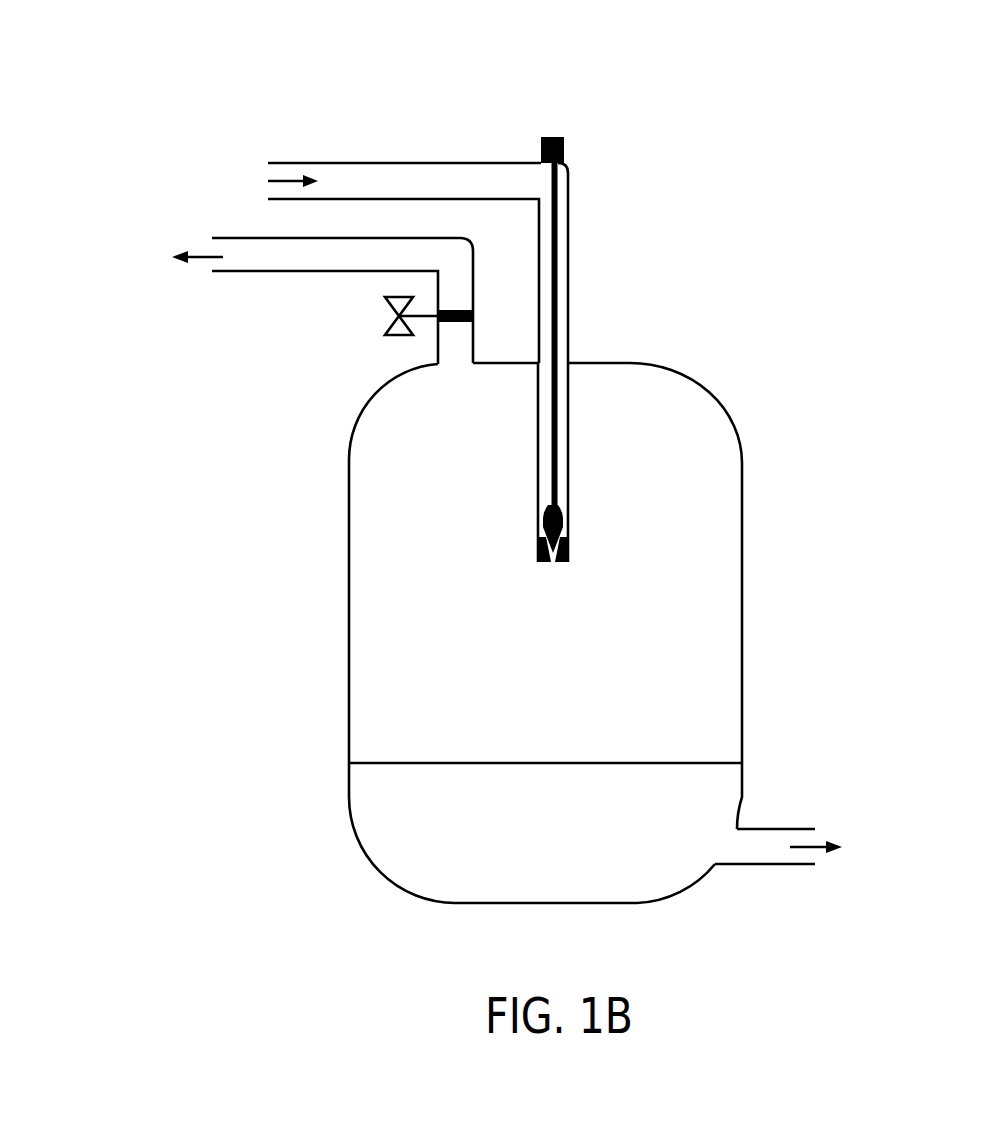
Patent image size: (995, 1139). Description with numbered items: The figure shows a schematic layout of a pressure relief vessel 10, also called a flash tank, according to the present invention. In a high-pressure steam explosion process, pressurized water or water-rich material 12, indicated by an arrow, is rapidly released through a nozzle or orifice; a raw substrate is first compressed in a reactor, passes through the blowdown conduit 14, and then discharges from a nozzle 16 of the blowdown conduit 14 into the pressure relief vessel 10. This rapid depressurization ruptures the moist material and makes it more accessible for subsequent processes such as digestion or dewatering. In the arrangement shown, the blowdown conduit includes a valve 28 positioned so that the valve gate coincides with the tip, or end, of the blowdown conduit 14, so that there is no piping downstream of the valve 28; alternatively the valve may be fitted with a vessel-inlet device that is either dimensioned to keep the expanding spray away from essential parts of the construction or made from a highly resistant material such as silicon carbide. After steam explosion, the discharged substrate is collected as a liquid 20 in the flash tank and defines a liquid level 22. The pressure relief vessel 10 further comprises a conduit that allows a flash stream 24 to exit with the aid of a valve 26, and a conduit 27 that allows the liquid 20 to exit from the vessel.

The pressure relief vessel 10 is at (650, 57).
The pressurized water or water-rich material 12 is at (257, 177).
The blowdown conduit 14 is at (568, 442).
The nozzle 16 is at (562, 575).
The liquid 20 is at (648, 880).
The liquid level 22 is at (703, 763).
The flash stream 24 is at (192, 240).
The valve 26 is at (373, 340).
The conduit 27 is at (827, 866).
The valve 28 is at (543, 535).